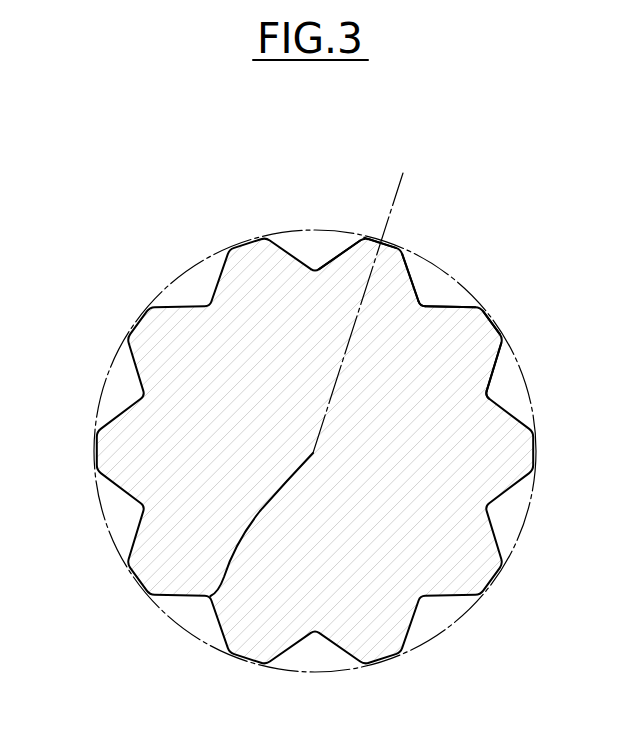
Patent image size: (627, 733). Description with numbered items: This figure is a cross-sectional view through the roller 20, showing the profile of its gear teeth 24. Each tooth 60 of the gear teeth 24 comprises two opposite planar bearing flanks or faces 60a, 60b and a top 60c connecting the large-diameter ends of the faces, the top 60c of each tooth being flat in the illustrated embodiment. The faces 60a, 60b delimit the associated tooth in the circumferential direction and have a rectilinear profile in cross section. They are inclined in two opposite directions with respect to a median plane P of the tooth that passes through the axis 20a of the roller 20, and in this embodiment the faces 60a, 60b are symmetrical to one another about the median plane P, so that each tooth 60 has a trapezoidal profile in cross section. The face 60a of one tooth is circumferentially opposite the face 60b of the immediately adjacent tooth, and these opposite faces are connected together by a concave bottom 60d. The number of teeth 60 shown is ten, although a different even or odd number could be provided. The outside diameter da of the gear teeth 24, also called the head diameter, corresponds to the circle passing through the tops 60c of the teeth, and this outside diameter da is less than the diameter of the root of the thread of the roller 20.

The roller 20 is at (326, 453).
The axis of the roller 20a is at (220, 630).
The gear teeth 24 is at (514, 303).
The tooth 60 is at (538, 459).
The bearing flank or face 60a is at (340, 253).
The bearing flank or face 60b is at (409, 276).
The top 60c is at (368, 238).
The concave bottom 60d is at (421, 306).
The median plane P is at (403, 174).
The outside diameter da is at (103, 380).